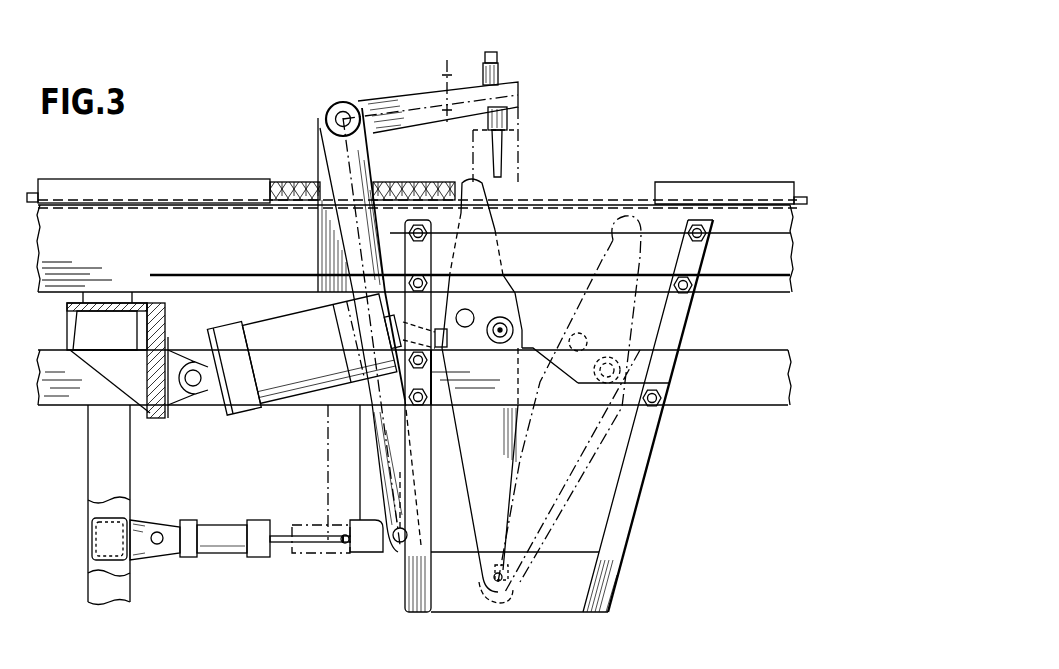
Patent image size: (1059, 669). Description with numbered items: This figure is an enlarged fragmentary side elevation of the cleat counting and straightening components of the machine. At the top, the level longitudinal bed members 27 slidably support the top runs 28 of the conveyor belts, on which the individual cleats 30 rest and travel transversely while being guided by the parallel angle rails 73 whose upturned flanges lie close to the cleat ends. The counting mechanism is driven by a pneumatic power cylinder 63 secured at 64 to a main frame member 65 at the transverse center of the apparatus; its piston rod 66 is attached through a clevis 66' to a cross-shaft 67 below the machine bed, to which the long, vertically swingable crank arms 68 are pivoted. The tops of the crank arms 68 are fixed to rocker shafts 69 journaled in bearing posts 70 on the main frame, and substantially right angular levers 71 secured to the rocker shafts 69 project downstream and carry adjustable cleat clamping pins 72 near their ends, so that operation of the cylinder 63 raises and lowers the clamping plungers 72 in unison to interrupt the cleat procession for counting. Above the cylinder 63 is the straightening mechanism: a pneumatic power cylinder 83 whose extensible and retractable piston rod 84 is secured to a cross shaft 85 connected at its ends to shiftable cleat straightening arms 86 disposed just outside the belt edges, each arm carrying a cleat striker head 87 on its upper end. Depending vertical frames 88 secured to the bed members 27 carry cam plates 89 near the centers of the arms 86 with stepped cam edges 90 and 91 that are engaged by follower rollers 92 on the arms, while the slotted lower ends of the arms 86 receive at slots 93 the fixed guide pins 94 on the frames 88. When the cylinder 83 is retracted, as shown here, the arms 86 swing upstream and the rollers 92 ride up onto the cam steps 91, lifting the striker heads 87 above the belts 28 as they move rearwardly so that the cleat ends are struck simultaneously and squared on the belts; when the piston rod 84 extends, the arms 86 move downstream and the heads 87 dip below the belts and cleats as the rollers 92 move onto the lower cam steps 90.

The longitudinal bed member 27 is at (783, 270).
The top run of conveyor belt 28 is at (598, 198).
The cleat 30 is at (314, 182).
The pneumatic power cylinder 63 is at (234, 554).
The cylinder securing point 64 is at (150, 548).
The main frame member 65 is at (90, 556).
The piston rod 66 is at (308, 558).
The clevis 66' is at (350, 555).
The cross-shaft 67 is at (399, 545).
The crank arm 68 is at (362, 460).
The rocker shaft 69 is at (343, 117).
The bearing post 70 is at (322, 122).
The right angular lever 71 is at (458, 90).
The cleat clamping pin 72 is at (512, 165).
The angle rail 73 is at (212, 179).
The pneumatic power cylinder 83 is at (276, 332).
The piston rod 84 is at (444, 336).
The cross shaft 85 is at (470, 315).
The cleat straightening arm 86 is at (471, 462).
The cleat striker head 87 is at (470, 183).
The vertical frame 88 is at (641, 500).
The cam plate 89 is at (550, 404).
The lower cam step 90 is at (583, 383).
The upper cam step 91 is at (527, 352).
The follower roller 92 is at (505, 343).
The slot 93 is at (520, 548).
The guide pin 94 is at (504, 580).